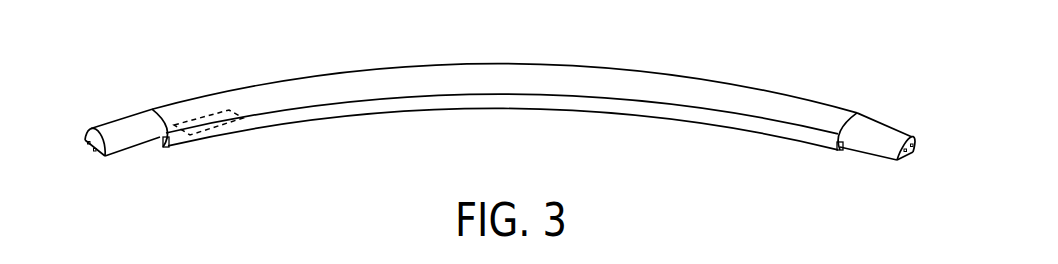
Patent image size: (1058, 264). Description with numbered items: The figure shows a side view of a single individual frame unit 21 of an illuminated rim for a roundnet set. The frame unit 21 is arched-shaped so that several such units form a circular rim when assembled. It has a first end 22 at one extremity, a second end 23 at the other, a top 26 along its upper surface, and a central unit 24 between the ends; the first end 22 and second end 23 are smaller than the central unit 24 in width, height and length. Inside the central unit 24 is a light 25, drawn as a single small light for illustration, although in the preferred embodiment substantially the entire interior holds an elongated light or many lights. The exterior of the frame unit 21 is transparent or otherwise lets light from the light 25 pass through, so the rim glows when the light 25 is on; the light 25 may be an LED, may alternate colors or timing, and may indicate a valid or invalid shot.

The single individual frame unit 21 is at (504, 83).
The first end 22 is at (84, 139).
The second end 23 is at (916, 139).
The central unit 24 is at (330, 77).
The light 25 is at (221, 128).
The top 26 is at (235, 96).